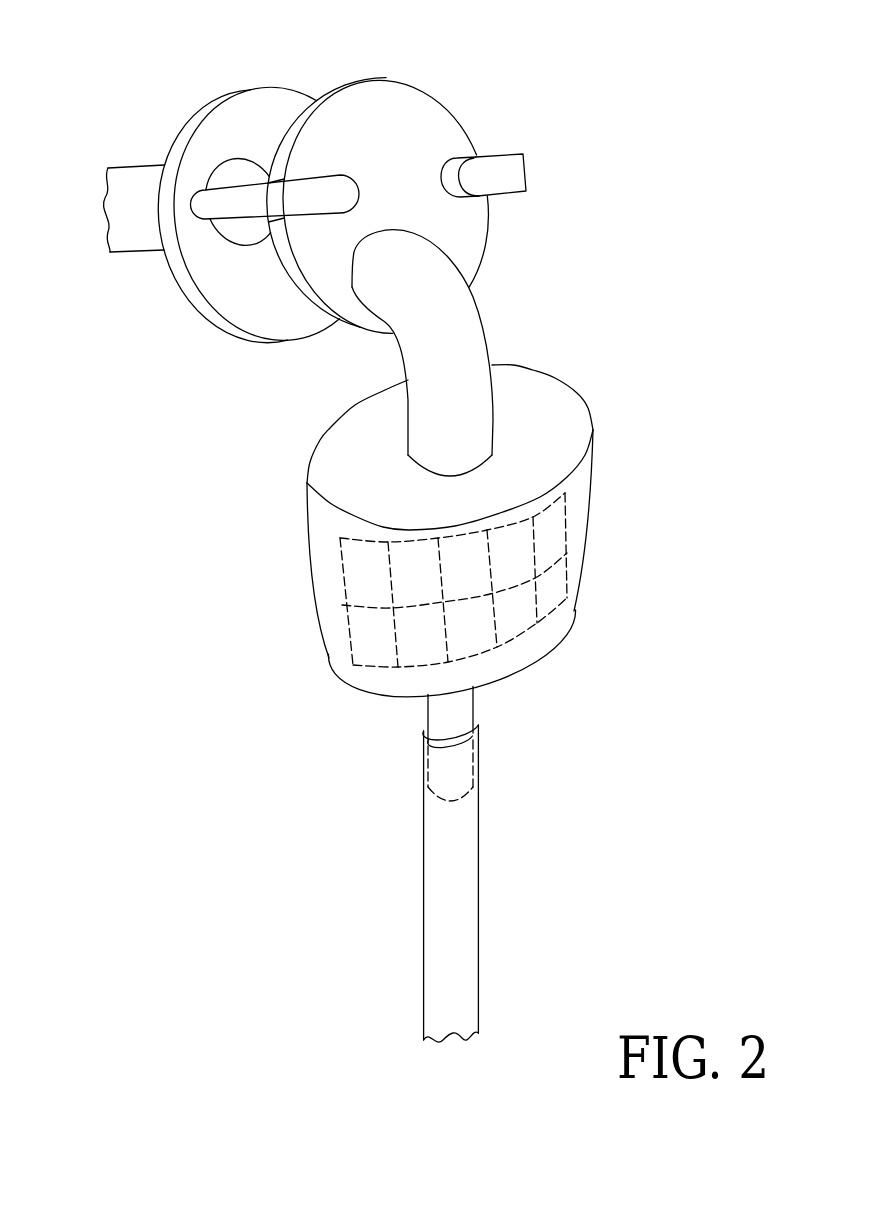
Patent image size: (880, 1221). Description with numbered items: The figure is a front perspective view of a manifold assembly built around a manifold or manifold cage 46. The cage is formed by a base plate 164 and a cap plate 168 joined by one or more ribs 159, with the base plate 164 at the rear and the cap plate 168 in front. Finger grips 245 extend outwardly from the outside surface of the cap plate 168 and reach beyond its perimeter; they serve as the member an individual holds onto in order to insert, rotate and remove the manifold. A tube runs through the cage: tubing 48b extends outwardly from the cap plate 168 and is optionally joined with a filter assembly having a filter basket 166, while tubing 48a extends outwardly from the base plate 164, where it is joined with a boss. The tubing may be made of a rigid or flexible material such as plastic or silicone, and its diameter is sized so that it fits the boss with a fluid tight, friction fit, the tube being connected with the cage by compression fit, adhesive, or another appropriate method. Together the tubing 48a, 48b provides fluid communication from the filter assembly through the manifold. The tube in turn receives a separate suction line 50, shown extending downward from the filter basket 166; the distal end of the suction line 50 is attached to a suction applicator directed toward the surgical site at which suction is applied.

The manifold cage 46 is at (538, 97).
The tubing 48a is at (123, 228).
The tubing 48b is at (468, 320).
The suction line 50 is at (480, 765).
The rib 159 is at (228, 207).
The base plate 164 is at (258, 107).
The filter basket 166 is at (568, 527).
The cap plate 168 is at (403, 98).
The finger grips 245 is at (515, 173).